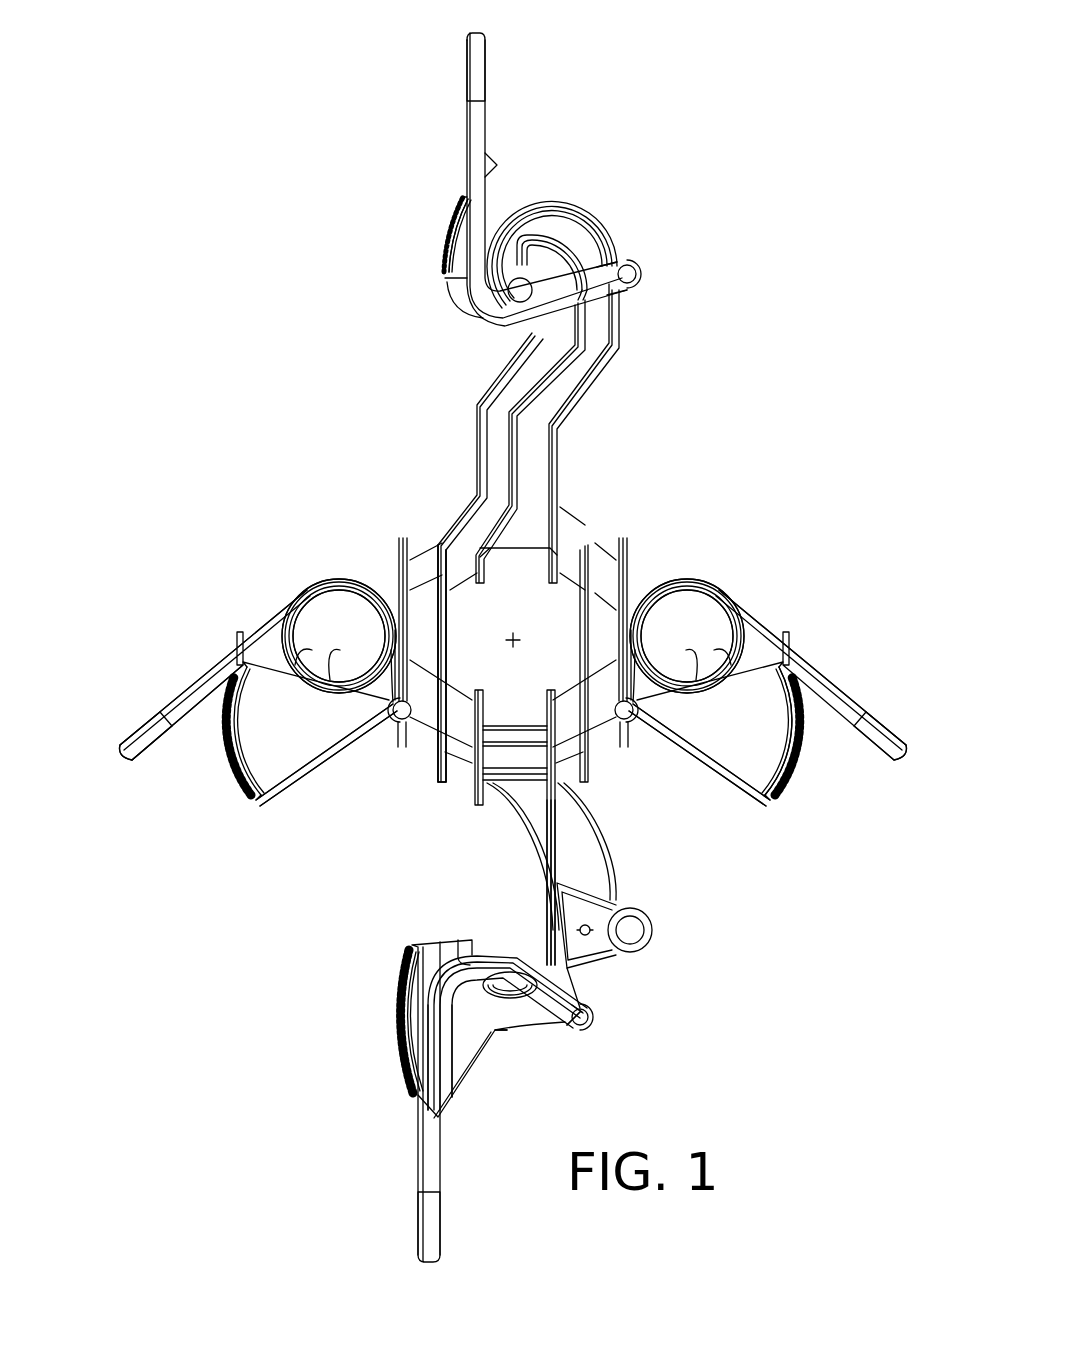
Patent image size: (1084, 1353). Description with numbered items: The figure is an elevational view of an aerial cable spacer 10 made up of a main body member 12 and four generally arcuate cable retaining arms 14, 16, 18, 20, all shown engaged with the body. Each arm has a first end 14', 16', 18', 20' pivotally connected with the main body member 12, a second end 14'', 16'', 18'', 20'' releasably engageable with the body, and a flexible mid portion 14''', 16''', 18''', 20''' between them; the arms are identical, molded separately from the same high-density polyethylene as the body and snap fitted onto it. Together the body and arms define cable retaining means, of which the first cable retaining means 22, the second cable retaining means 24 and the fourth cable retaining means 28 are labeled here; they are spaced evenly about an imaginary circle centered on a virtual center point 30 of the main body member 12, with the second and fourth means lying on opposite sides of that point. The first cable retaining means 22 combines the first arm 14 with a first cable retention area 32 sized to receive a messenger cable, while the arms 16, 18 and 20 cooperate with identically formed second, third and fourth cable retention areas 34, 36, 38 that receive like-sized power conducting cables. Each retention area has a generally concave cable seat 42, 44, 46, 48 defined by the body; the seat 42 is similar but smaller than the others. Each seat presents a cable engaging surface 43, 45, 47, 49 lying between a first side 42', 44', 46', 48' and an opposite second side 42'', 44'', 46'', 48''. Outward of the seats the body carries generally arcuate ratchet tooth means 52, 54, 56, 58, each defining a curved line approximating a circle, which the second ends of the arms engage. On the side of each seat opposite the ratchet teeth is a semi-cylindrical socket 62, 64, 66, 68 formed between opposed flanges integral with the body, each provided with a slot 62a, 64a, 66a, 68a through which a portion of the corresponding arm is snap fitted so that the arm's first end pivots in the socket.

The aerial cable spacer 10 is at (250, 945).
The main body member 12 is at (540, 470).
The first cable retaining arm 14 is at (512, 179).
The first end of first cable retaining arm 14' is at (653, 259).
The second end of first cable retaining arm 14'' is at (438, 63).
The flexible mid portion of first cable retaining arm 14''' is at (411, 309).
The second cable retaining arm 16 is at (826, 675).
The first end of second cable retaining arm 16' is at (699, 759).
The second end of second cable retaining arm 16'' is at (899, 785).
The flexible mid portion of second cable retaining arm 16''' is at (713, 591).
The third cable retaining arm 18 is at (418, 1101).
The first end of third cable retaining arm 18' is at (565, 1067).
The second end of third cable retaining arm 18'' is at (463, 1238).
The flexible mid portion of third cable retaining arm 18''' is at (477, 1064).
The fourth cable retaining arm 20 is at (200, 675).
The first end of fourth cable retaining arm 20' is at (326, 755).
The second end of fourth cable retaining arm 20'' is at (120, 779).
The flexible mid portion of fourth cable retaining arm 20''' is at (339, 591).
The first cable retaining means 22 is at (592, 212).
The second cable retaining means 24 is at (785, 600).
The fourth cable retaining means 28 is at (262, 592).
The virtual center point 30 is at (514, 636).
The first cable retention area 32 is at (488, 342).
The second cable retention area 34 is at (690, 632).
The third cable retention area 36 is at (508, 962).
The fourth cable retention area 38 is at (320, 632).
The first cable seat 42 is at (552, 232).
The first side of first cable seat 42' is at (394, 235).
The second side of first cable seat 42'' is at (616, 240).
The cable engaging surface of first cable seat 43 is at (507, 285).
The second cable seat 44 is at (719, 687).
The first side of second cable seat 44' is at (756, 745).
The second side of second cable seat 44'' is at (669, 598).
The cable engaging surface of second cable seat 45 is at (728, 645).
The third cable seat 46 is at (507, 1033).
The first side of third cable seat 46' is at (386, 1010).
The second side of third cable seat 46'' is at (511, 882).
The cable engaging surface of third cable seat 47 is at (512, 978).
The fourth cable seat 48 is at (307, 686).
The first side of fourth cable seat 48' is at (187, 731).
The second side of fourth cable seat 48'' is at (361, 591).
The cable engaging surface of fourth cable seat 49 is at (315, 650).
The first ratchet tooth means 52 is at (453, 213).
The second ratchet tooth means 54 is at (800, 755).
The third ratchet tooth means 56 is at (400, 1025).
The fourth ratchet tooth means 58 is at (232, 745).
The first semi-cylindrical socket 62 is at (648, 290).
The slot of first socket 62a is at (633, 255).
The second semi-cylindrical socket 64 is at (604, 775).
The slot of second socket 64a is at (640, 725).
The third semi-cylindrical socket 66 is at (620, 1005).
The slot of third socket 66a is at (597, 1030).
The fourth semi-cylindrical socket 68 is at (440, 787).
The slot of fourth socket 68a is at (388, 725).